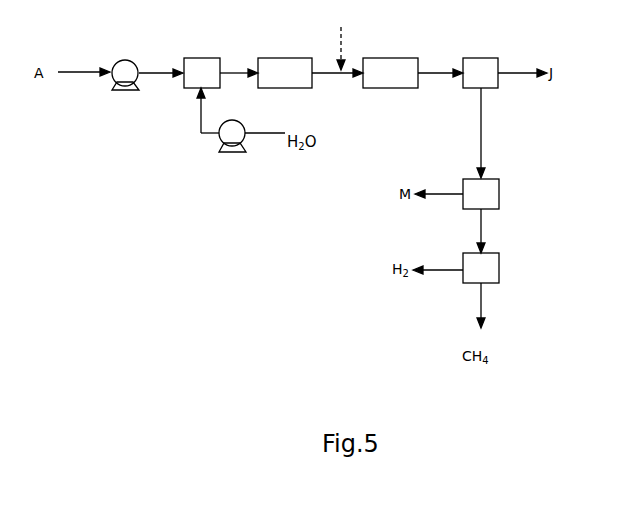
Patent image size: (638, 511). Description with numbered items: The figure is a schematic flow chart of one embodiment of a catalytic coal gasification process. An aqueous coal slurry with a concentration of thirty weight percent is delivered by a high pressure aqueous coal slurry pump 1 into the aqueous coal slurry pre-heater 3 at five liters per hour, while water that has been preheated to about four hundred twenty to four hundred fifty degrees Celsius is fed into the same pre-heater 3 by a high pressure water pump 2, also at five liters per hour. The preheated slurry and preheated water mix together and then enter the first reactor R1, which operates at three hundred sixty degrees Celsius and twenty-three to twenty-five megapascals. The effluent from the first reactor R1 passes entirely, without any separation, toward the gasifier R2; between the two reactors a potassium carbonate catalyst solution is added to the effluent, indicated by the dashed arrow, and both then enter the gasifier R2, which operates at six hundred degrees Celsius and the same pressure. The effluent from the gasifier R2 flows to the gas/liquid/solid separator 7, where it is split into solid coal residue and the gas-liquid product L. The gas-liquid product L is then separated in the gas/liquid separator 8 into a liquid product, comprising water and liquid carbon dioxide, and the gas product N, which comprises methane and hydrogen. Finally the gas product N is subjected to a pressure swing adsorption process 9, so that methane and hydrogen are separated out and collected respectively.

The high pressure aqueous coal slurry pump 1 is at (117, 62).
The high pressure water pump 2 is at (220, 135).
The aqueous coal slurry pre-heater 3 is at (202, 58).
The gas/liquid/solid separator 7 is at (492, 58).
The gas/liquid separator 8 is at (498, 193).
The pressure swing adsorption process 9 is at (498, 268).
The first reactor R1 is at (270, 58).
The gasifier R2 is at (395, 58).
The gas-liquid product L is at (482, 122).
The gas product N is at (483, 230).